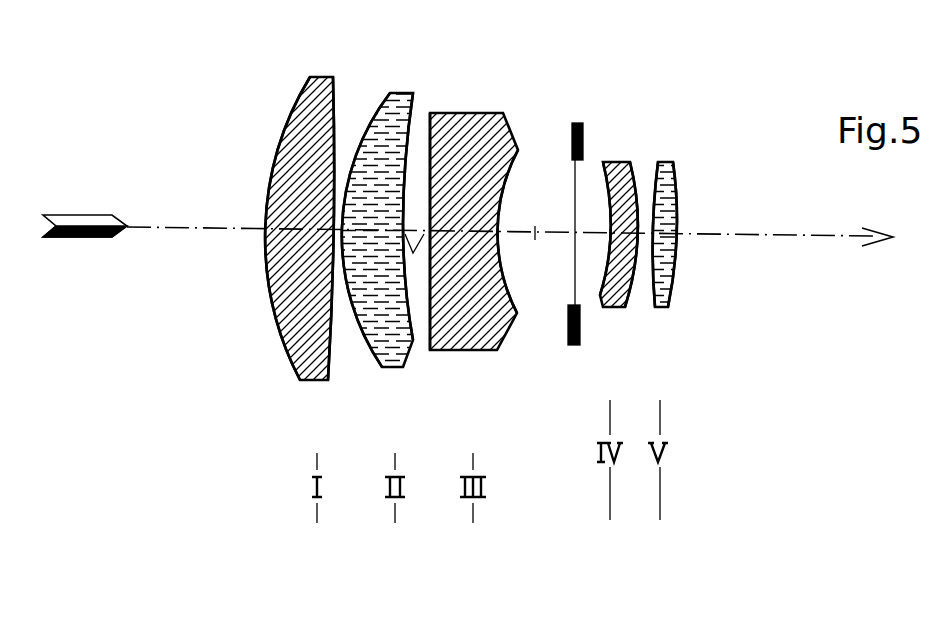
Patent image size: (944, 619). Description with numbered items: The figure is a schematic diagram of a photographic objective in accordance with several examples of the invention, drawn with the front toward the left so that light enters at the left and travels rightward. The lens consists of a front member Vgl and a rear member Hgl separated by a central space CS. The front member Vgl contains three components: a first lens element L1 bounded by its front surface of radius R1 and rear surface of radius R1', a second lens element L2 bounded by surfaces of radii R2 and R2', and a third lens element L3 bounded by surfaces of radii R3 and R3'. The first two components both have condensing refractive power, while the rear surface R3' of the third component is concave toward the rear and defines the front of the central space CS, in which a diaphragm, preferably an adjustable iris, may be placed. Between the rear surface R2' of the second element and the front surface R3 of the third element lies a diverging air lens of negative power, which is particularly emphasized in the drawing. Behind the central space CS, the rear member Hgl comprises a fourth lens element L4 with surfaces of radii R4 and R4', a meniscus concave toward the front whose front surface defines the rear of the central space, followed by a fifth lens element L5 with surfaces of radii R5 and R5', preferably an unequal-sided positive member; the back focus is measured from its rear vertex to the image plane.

The front surface radius of first lens element R1 is at (278, 200).
The rear surface radius of first lens element R1' is at (327, 192).
The front surface radius of second lens element R2 is at (366, 200).
The rear surface radius of second lens element R2' is at (412, 181).
The front surface radius of third lens element R3 is at (449, 190).
The rear surface radius of third lens element R3' is at (510, 176).
The front surface radius of fourth lens element R4 is at (593, 187).
The rear surface radius of fourth lens element R4' is at (629, 199).
The front surface radius of fifth lens element R5 is at (675, 200).
The rear surface radius of fifth lens element R5' is at (695, 218).
The first lens element L1 is at (317, 382).
The second lens element L2 is at (395, 367).
The third lens element L3 is at (473, 350).
The fourth lens element L4 is at (610, 307).
The fifth lens element L5 is at (660, 307).
The central space CS is at (537, 230).
The front member Vgl is at (517, 333).
The rear member Hgl is at (590, 290).